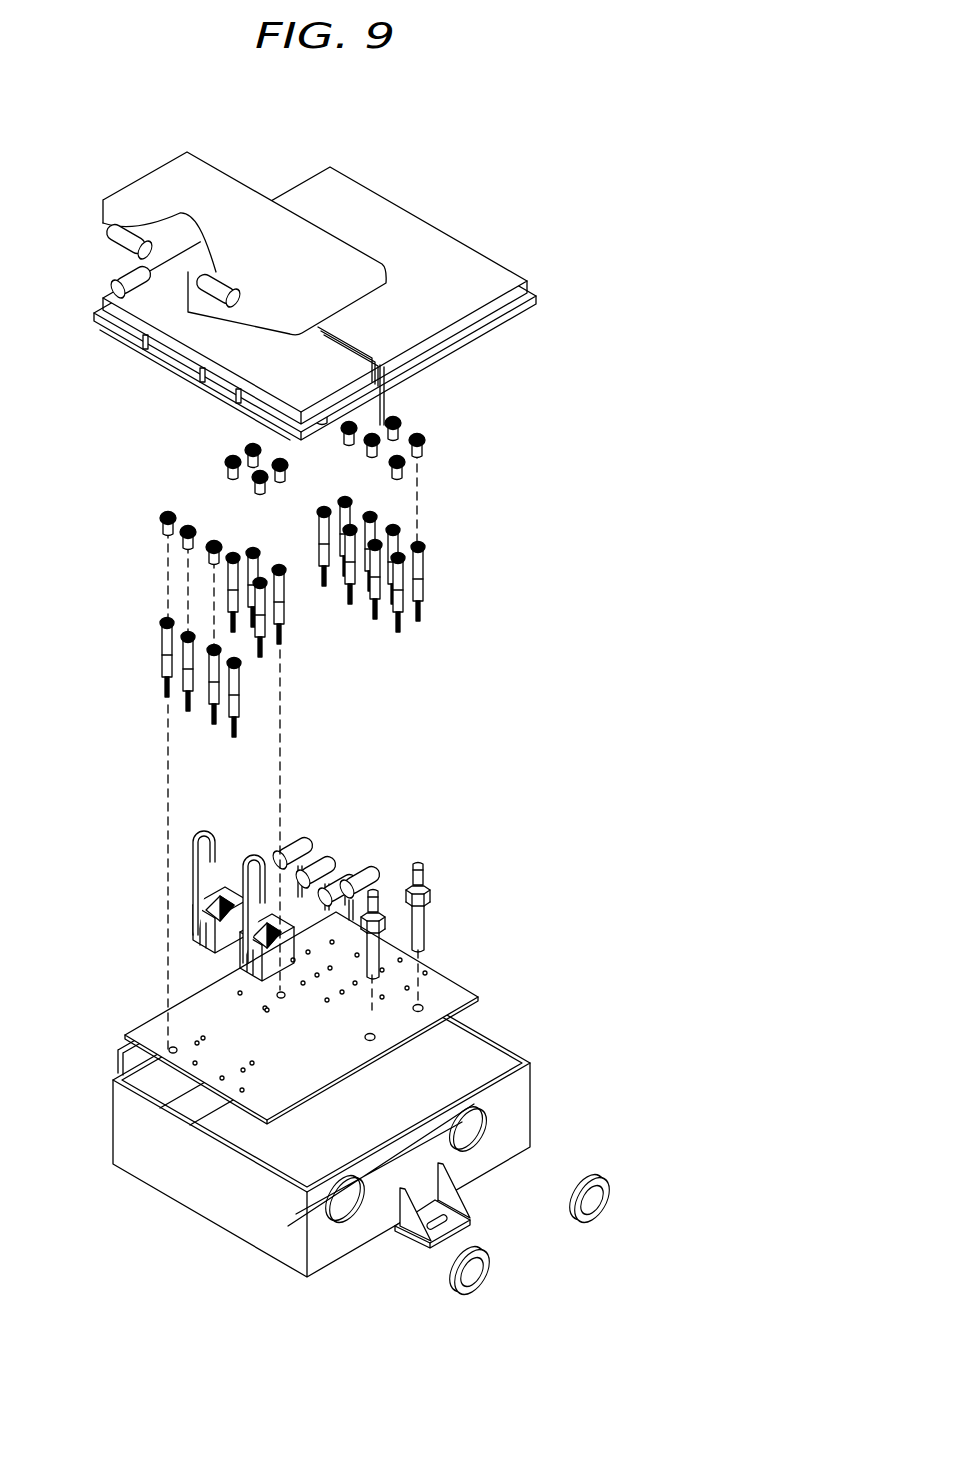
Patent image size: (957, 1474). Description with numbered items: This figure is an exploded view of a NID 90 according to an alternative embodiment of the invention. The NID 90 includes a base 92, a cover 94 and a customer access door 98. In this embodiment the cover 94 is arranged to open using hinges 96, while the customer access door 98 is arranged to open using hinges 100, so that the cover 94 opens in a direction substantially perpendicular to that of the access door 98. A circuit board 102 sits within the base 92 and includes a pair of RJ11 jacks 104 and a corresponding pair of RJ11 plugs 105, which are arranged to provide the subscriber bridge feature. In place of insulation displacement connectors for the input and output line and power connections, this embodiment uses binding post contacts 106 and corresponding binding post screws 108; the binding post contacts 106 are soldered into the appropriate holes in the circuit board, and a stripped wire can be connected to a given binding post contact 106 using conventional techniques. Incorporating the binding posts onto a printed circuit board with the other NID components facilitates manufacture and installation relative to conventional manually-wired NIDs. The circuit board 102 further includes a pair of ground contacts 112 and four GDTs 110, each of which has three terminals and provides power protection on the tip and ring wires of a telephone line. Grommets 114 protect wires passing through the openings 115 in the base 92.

The NID 90 is at (490, 166).
The base 92 is at (105, 1122).
The cover 94 is at (527, 270).
The hinges 96 is at (113, 283).
The customer access door 98 is at (100, 208).
The hinges 100 is at (245, 244).
The circuit board 102 is at (478, 998).
The RJ11 jacks 104 is at (248, 956).
The RJ11 plugs 105 is at (242, 870).
The binding post contacts 106 is at (430, 548).
The binding post screws 108 is at (428, 438).
The GDTs 110 is at (365, 875).
The ground contacts 112 is at (385, 905).
The grommets 114 is at (490, 1276).
The openings 115 is at (370, 1170).